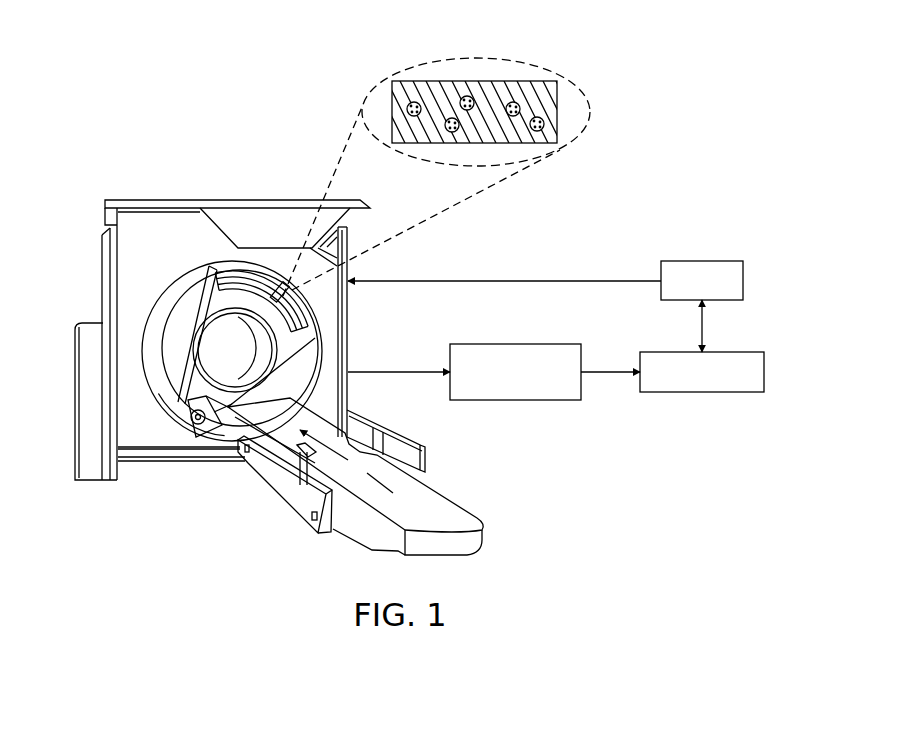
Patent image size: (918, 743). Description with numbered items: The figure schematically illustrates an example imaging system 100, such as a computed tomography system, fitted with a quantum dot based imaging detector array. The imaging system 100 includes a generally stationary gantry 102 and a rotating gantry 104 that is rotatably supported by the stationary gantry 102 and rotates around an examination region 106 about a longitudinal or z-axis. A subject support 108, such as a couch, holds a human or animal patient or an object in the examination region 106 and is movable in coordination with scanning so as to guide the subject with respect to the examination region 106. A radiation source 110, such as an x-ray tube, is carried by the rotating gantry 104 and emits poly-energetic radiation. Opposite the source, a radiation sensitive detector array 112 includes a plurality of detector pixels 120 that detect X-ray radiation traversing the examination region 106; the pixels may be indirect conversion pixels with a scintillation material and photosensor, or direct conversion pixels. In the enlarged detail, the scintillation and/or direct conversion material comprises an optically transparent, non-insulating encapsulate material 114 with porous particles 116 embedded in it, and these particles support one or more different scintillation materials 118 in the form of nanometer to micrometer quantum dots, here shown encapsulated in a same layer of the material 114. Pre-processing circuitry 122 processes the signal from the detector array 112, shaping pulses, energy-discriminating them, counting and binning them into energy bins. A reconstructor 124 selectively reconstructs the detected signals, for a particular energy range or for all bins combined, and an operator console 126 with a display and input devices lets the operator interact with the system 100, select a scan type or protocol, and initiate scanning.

The imaging system 100 is at (88, 130).
The stationary gantry 102 is at (110, 290).
The rotating gantry 104 is at (212, 302).
The examination region 106 is at (212, 354).
The subject support 108 is at (468, 508).
The radiation source 110 is at (198, 425).
The radiation sensitive detector array 112 is at (312, 318).
The encapsulate material 114 is at (532, 81).
The porous particles 116 is at (466, 96).
The scintillation materials 118 is at (477, 101).
The detector pixels 120 is at (277, 283).
The pre-processing circuitry 122 is at (548, 400).
The reconstructor 124 is at (700, 392).
The operator console 126 is at (702, 261).